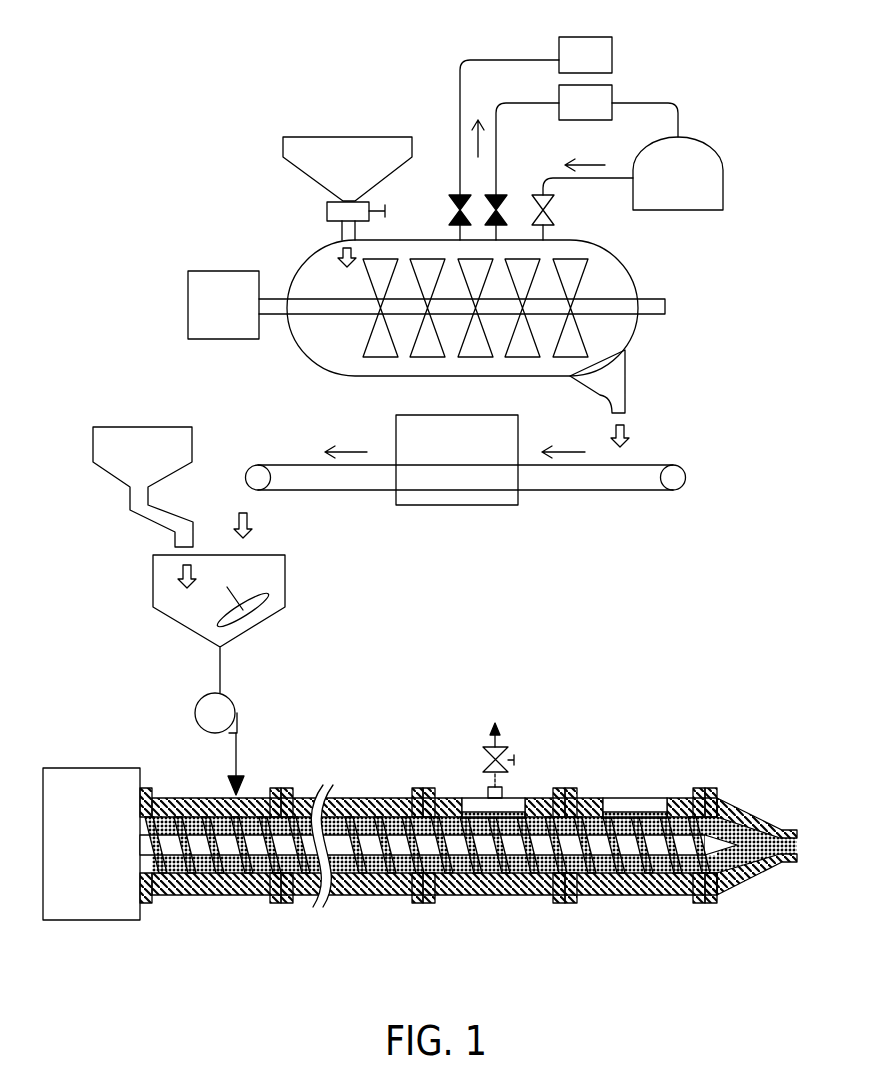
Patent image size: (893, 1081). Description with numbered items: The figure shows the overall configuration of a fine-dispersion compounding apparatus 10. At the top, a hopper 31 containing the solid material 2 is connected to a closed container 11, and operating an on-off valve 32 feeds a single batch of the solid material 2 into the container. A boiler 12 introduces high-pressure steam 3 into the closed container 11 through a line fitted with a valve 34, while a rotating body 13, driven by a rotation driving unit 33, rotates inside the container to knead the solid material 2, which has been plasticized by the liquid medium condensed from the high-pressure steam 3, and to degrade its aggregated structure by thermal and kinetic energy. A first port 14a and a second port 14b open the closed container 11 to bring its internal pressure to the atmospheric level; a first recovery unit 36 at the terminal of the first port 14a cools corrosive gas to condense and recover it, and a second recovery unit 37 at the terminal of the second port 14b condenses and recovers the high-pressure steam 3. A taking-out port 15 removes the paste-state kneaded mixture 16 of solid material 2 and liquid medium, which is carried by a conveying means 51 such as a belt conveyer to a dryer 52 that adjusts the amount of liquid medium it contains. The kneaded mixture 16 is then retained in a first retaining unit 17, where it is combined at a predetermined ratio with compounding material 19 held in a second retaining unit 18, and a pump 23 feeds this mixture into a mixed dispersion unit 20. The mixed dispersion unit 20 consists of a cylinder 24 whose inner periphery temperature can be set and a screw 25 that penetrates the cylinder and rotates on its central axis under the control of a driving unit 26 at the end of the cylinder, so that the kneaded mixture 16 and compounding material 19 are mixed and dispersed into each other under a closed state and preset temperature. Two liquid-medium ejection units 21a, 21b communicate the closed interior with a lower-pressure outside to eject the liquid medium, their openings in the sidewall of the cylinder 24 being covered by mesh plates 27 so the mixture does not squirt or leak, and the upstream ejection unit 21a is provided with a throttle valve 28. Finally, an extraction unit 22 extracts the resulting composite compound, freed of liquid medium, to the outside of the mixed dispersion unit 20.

The fine-dispersion compounding apparatus 10 is at (154, 126).
The solid material 2 is at (342, 256).
The high-pressure steam 3 is at (473, 145).
The closed container 11 is at (628, 258).
The boiler 12 is at (692, 145).
The rotating body 13 is at (368, 343).
The first port 14a is at (452, 197).
The second port 14b is at (522, 186).
The taking-out port 15 is at (627, 405).
The kneaded mixture 16 is at (632, 433).
The first retaining unit 17 is at (286, 590).
The second retaining unit 18 is at (130, 426).
The compounding material 19 is at (180, 572).
The mixed dispersion unit 20 is at (468, 852).
The liquid-medium ejection unit 21a is at (476, 784).
The liquid-medium ejection unit 21b is at (611, 784).
The extraction unit 22 is at (790, 865).
The pump 23 is at (243, 713).
The cylinder 24 is at (202, 895).
The screw 25 is at (357, 895).
The driving unit 26 is at (90, 767).
The mesh plates 27 is at (515, 813).
The throttle valve 28 is at (500, 745).
The hopper 31 is at (362, 137).
The on-off valve 32 is at (327, 212).
The rotation driving unit 33 is at (222, 270).
The gas supply valve 34 is at (552, 212).
The first recovery unit 36 is at (612, 52).
The second recovery unit 37 is at (612, 95).
The conveying means 51 is at (630, 491).
The dryer 52 is at (455, 505).